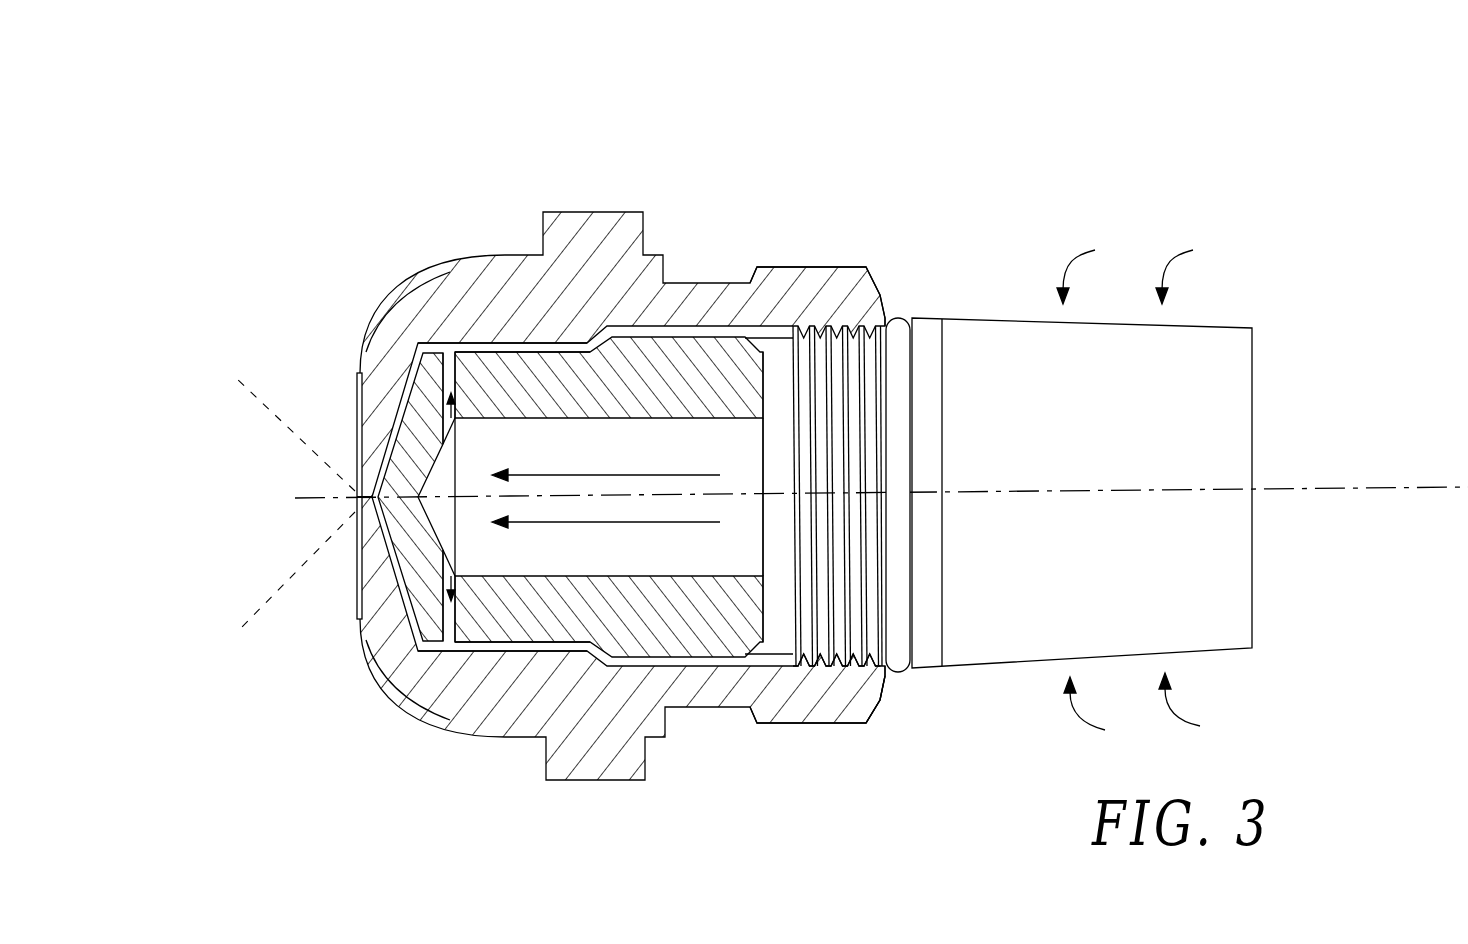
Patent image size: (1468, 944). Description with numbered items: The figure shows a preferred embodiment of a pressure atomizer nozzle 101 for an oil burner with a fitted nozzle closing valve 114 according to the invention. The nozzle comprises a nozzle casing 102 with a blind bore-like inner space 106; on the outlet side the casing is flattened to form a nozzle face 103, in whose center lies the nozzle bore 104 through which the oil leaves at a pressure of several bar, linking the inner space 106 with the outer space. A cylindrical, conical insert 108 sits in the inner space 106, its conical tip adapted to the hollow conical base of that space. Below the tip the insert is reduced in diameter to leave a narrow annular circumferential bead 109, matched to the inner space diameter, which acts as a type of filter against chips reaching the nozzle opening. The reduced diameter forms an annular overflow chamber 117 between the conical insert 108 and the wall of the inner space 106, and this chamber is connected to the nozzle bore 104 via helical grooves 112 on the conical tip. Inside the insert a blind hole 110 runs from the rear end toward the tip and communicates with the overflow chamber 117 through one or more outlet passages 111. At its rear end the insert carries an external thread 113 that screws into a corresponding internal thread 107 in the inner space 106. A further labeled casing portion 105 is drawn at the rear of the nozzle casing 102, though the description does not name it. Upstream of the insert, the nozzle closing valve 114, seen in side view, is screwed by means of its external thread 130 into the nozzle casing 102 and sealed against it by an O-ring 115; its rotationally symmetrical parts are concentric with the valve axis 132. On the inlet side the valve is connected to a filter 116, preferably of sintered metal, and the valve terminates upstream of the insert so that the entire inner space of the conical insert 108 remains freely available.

The pressure atomizer nozzle 101 is at (910, 201).
The nozzle casing 102 is at (495, 278).
The nozzle face 103 is at (350, 402).
The nozzle bore 104 is at (355, 502).
The nut portion 105 is at (813, 272).
The inner space 106 is at (773, 373).
The internal thread 107 is at (782, 658).
The conical insert 108 is at (672, 612).
The annular circumferential bead 109 is at (505, 643).
The blind hole 110 is at (585, 450).
The outlet passages 111 is at (455, 633).
The helical grooves 112 is at (366, 635).
The external thread 113 is at (680, 332).
The nozzle closing valve 114 is at (909, 718).
The O-ring 115 is at (900, 349).
The filter 116 is at (1238, 373).
The annular overflow chamber 117 is at (468, 350).
The external thread 130 is at (858, 508).
The valve axis 132 is at (1385, 488).